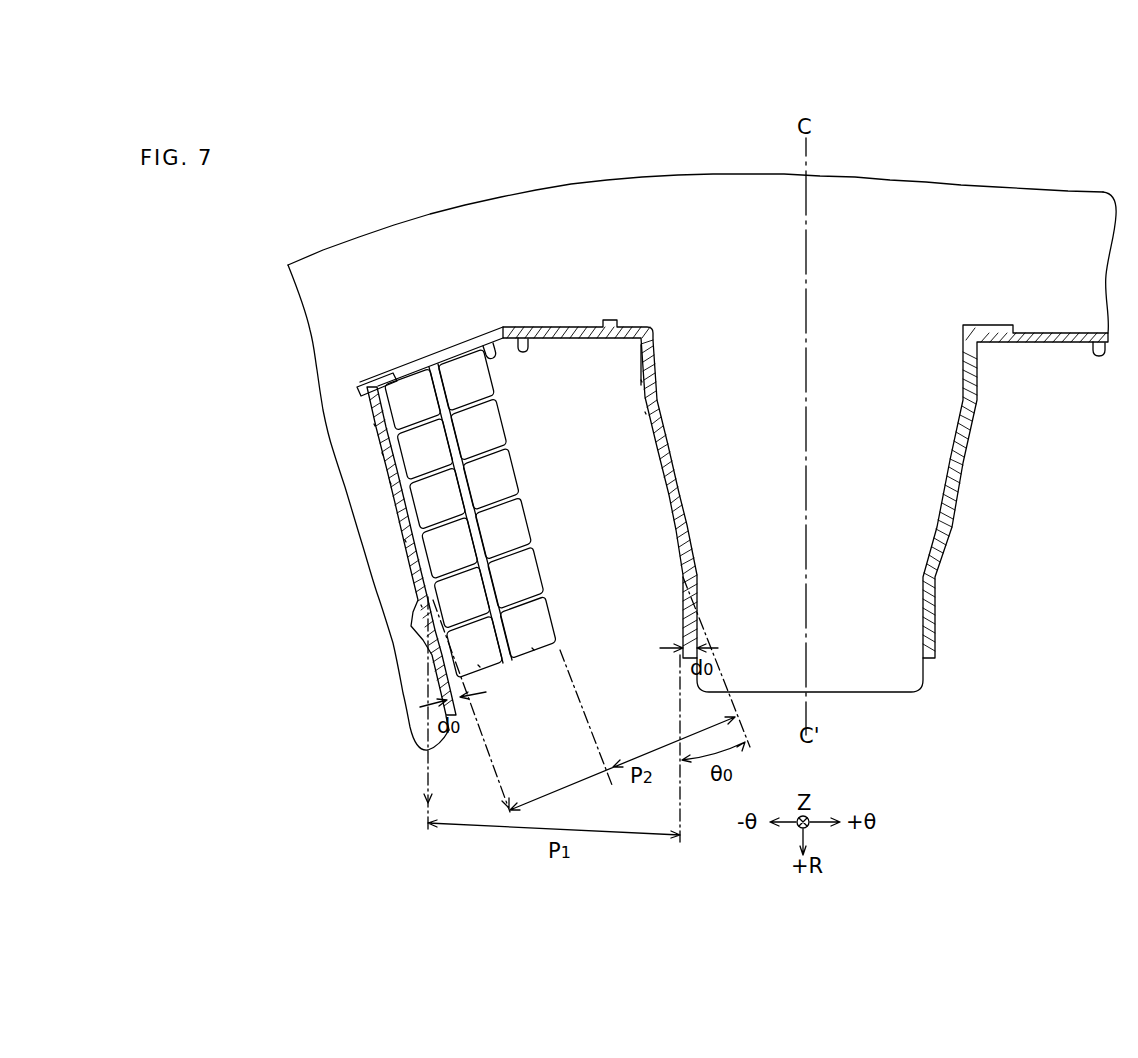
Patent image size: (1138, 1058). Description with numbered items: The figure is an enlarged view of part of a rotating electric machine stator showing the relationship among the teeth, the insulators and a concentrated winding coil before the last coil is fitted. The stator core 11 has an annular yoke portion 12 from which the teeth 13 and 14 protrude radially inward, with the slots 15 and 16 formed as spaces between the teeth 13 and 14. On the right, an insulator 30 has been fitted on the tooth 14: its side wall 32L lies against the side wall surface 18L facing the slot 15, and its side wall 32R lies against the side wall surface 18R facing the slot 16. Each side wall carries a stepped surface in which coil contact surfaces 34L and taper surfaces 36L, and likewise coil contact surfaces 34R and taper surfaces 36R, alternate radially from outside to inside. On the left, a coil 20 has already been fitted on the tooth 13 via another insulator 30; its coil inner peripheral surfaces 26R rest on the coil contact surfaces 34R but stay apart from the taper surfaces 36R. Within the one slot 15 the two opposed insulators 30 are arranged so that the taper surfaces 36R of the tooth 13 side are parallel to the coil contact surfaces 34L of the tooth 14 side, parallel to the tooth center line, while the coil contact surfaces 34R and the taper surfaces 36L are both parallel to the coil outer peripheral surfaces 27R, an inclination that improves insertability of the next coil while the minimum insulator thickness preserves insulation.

The stator core 11 is at (432, 213).
The annular yoke portion 12 is at (716, 190).
The tooth 13 is at (412, 735).
The tooth 14 is at (893, 694).
The slot 15 is at (594, 666).
The slot 16 is at (981, 669).
The side wall surface 18L is at (678, 466).
The side wall surface 18R is at (941, 459).
The concentrated winding coil 20 is at (470, 550).
The coil inner peripheral surface 26R is at (400, 409).
The coil outer peripheral surface 27R is at (497, 359).
The insulator 30 is at (449, 345).
The side wall 32L is at (656, 393).
The side wall 32R is at (365, 392).
The coil contact surface 34L is at (640, 380).
The coil contact surface 34R is at (374, 424).
The taper surface 36L is at (645, 412).
The taper surface 36R is at (382, 454).